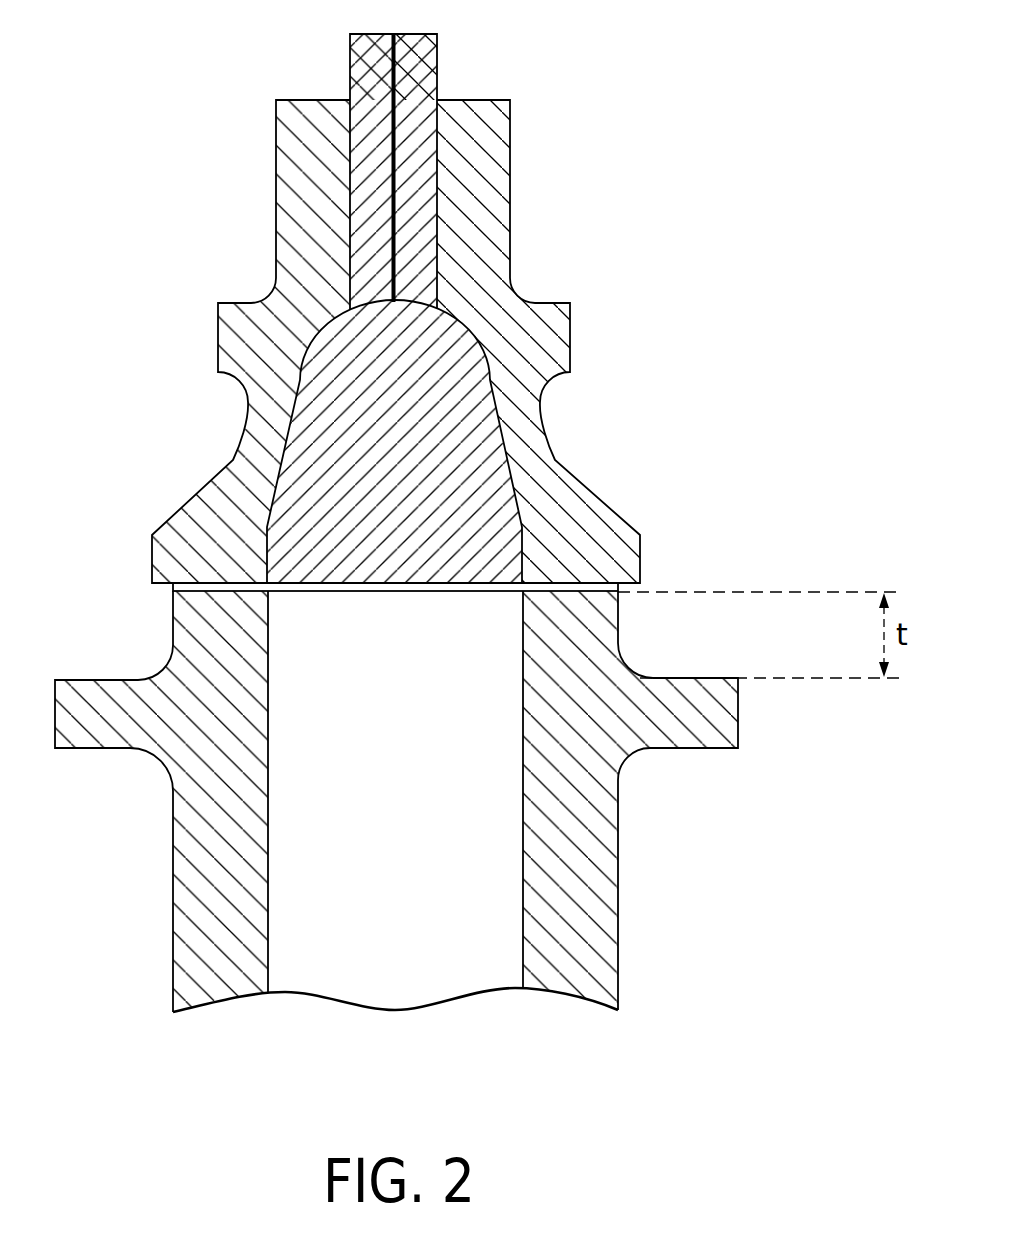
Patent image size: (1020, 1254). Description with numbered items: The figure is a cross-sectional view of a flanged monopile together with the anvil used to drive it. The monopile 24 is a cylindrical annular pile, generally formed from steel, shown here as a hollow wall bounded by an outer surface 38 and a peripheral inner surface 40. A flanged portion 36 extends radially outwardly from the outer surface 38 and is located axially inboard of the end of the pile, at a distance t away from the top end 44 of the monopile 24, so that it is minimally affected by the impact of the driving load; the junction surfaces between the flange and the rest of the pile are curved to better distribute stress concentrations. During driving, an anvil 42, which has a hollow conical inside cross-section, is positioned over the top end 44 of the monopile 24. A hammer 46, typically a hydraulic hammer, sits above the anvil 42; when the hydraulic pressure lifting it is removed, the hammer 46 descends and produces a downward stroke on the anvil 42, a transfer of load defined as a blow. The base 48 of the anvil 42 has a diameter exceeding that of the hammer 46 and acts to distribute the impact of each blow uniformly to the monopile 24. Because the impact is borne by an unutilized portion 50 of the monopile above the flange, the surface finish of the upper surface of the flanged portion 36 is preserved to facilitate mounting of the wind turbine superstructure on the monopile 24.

The monopile 24 is at (605, 923).
The flanged portion 36 is at (730, 730).
The outer surface 38 is at (620, 810).
The peripheral inner surface 40 is at (270, 896).
The anvil 42 is at (445, 430).
The top end 44 is at (645, 580).
The hammer 46 is at (427, 60).
The base 48 is at (173, 588).
The unutilized portion 50 is at (597, 628).